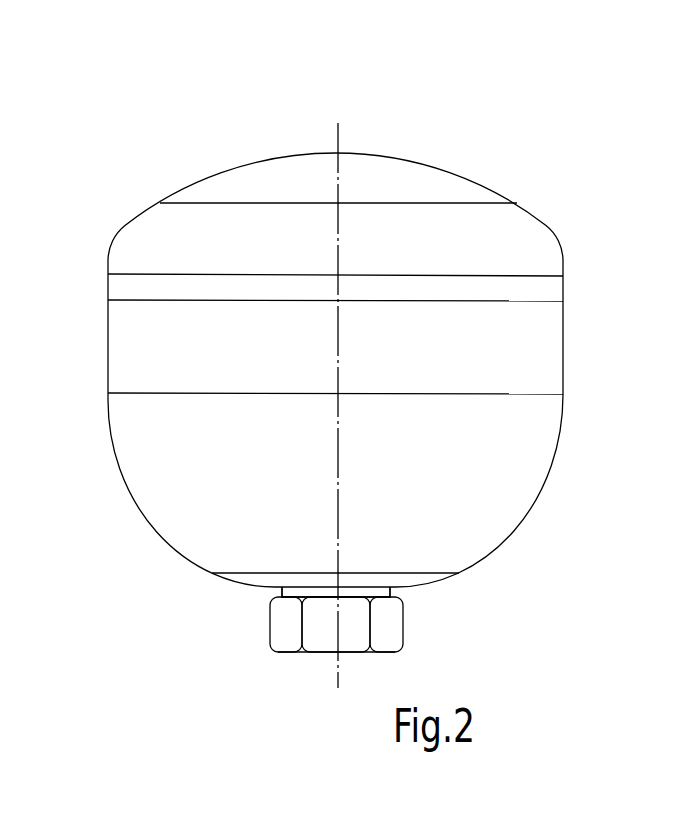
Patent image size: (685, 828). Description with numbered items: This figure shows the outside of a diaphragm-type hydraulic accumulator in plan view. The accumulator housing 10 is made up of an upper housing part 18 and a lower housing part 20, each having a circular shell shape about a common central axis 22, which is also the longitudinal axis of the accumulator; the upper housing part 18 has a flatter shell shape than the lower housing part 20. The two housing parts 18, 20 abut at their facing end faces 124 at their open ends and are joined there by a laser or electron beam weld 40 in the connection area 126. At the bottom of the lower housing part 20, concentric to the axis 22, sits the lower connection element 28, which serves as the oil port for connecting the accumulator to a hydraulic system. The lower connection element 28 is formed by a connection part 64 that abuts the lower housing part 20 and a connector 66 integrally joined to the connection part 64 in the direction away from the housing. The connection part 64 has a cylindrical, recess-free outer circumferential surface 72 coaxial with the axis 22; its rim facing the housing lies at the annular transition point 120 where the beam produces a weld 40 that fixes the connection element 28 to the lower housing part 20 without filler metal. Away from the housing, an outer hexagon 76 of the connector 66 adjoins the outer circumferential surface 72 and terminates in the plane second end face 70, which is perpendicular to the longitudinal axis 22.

The accumulator housing 10 is at (379, 370).
The upper housing part 18 is at (502, 253).
The lower housing part 20 is at (492, 512).
The central axis 22 is at (338, 140).
The lower connection element 28 is at (326, 666).
The weld 40 is at (307, 419).
The connection part 64 is at (363, 592).
The connector 66 is at (290, 632).
The second end face 70 is at (382, 655).
The outer circumferential surface 72 is at (245, 621).
The outer hexagon 76 is at (274, 666).
The transition point 120 is at (393, 589).
The facing end faces 124 is at (396, 322).
The connection area 126 is at (335, 275).